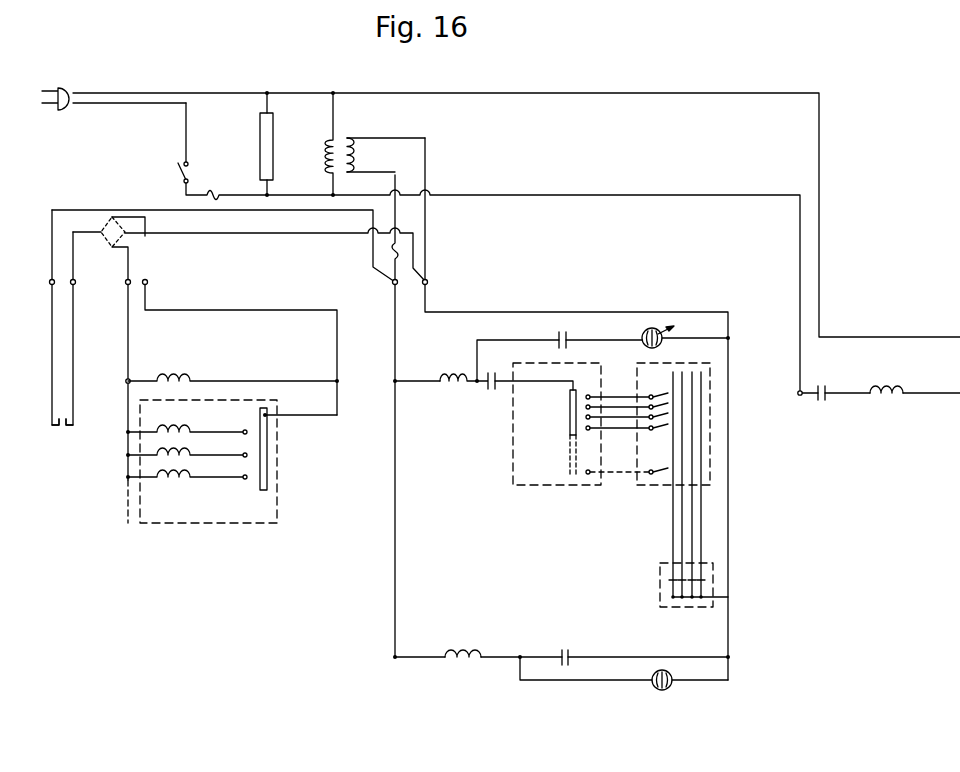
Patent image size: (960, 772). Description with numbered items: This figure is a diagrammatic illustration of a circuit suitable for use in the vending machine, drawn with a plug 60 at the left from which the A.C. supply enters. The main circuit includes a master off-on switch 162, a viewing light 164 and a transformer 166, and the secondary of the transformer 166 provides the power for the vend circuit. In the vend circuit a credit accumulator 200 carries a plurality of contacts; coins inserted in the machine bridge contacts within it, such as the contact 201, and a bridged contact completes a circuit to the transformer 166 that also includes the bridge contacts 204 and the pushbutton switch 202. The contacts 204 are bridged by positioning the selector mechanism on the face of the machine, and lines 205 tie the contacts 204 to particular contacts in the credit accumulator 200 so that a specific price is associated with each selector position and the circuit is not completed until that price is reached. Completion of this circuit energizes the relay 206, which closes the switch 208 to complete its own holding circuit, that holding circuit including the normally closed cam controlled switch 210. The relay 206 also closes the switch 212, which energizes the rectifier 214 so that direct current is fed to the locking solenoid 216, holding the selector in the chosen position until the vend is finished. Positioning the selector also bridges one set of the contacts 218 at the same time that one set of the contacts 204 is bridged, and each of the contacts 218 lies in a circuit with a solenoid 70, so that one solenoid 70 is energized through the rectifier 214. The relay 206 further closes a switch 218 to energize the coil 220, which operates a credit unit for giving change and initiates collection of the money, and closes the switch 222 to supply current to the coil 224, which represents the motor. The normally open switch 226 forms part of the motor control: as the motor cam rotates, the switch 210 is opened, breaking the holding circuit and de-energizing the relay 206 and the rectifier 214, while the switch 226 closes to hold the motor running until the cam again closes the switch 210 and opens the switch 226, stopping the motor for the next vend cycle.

The power plug 60 is at (36, 100).
The master off-on switch 162 is at (175, 173).
The viewing light 164 is at (258, 147).
The transformer 166 is at (327, 158).
The rectifier 214 is at (112, 250).
The switch 212 is at (65, 433).
The locking solenoid 216 is at (173, 380).
The solenoid 70 is at (175, 432).
The contacts 218 is at (252, 483).
The relay 206 is at (452, 379).
The pushbutton switch 202 is at (490, 390).
The switch 208 is at (558, 335).
The cam controlled switch 210 is at (640, 335).
The lines 205 is at (618, 396).
The bridge contacts 204 is at (566, 433).
The contact 201 is at (666, 572).
The credit accumulator 200 is at (657, 581).
The switch 222 is at (570, 651).
The coil 224 is at (462, 667).
The switch 226 is at (668, 690).
The coil 220 is at (885, 397).